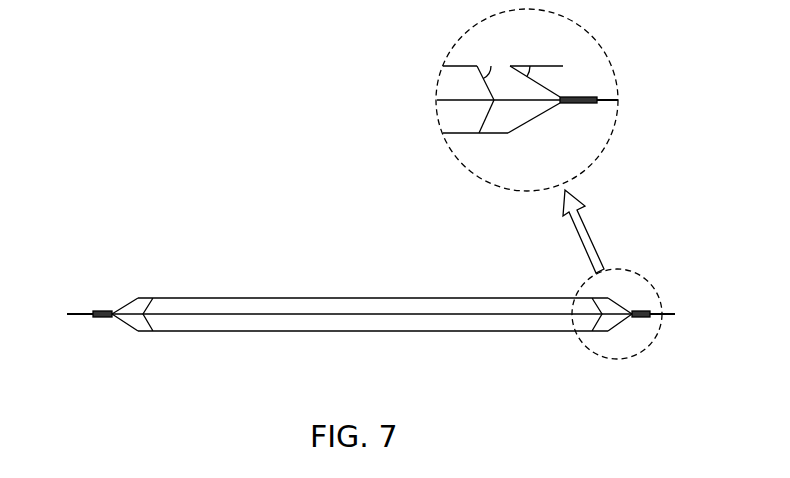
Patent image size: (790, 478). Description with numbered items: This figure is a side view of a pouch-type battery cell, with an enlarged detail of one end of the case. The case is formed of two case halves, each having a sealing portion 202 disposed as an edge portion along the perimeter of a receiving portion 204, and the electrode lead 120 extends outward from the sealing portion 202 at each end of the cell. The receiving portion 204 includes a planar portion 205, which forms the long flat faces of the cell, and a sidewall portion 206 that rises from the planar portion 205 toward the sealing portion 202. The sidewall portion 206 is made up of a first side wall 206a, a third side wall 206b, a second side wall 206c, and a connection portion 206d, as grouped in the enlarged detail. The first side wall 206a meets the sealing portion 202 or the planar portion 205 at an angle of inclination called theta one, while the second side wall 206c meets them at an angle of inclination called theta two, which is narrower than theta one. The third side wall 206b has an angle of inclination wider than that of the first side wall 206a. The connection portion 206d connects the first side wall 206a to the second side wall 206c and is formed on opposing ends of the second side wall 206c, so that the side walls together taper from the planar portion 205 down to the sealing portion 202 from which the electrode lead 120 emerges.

The electrode lead 120 is at (77, 311).
The sealing portion 202 is at (102, 311).
The receiving portion 204 is at (399, 328).
The planar portion 205 is at (292, 331).
The sidewall portion 206 is at (461, 172).
The first side wall 206a is at (491, 115).
The third side wall 206b is at (450, 113).
The second side wall 206c is at (535, 152).
The connection portion 206d is at (513, 115).